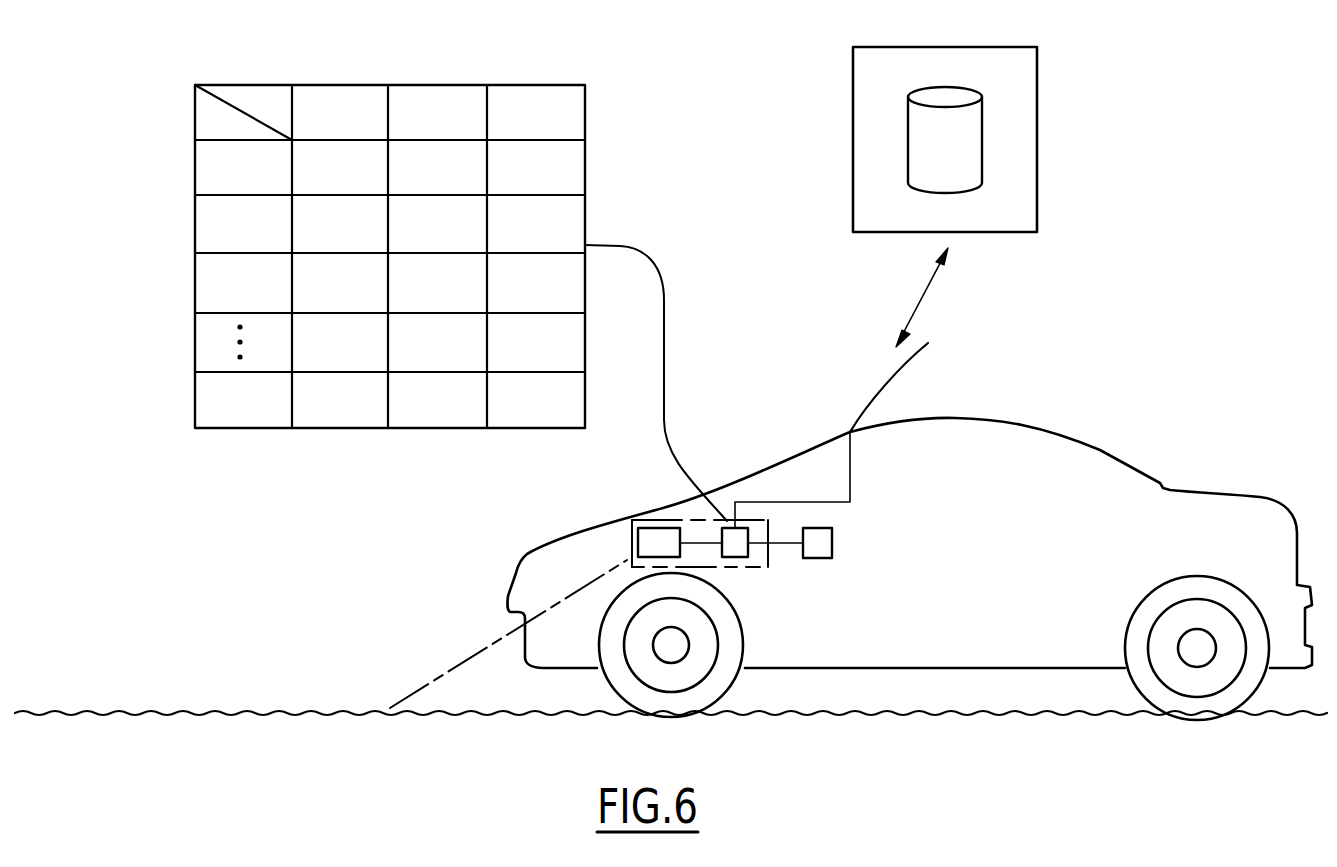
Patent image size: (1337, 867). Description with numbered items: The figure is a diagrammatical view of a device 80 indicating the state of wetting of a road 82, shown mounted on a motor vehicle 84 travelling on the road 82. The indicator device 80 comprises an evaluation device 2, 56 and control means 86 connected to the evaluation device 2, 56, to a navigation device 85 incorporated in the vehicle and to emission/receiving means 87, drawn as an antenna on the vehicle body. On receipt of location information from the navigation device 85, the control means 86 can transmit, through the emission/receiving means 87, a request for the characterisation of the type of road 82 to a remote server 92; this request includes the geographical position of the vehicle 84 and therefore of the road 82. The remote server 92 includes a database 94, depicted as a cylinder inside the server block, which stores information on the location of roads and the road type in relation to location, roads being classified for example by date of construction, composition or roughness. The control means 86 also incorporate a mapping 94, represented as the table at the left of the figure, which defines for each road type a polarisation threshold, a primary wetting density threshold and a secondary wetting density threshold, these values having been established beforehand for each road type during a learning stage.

The evaluation device 2 is at (623, 515).
The evaluation device 56 is at (640, 543).
The device indicating the state of wetting of a road 80 is at (134, 114).
The road 82 is at (120, 708).
The motor vehicle 84 is at (1118, 494).
The navigation device 85 is at (817, 543).
The control means 86 is at (738, 548).
The emission/receiving means 87 is at (877, 392).
The remote server 92 is at (1037, 137).
The database / mapping 94 is at (470, 85).